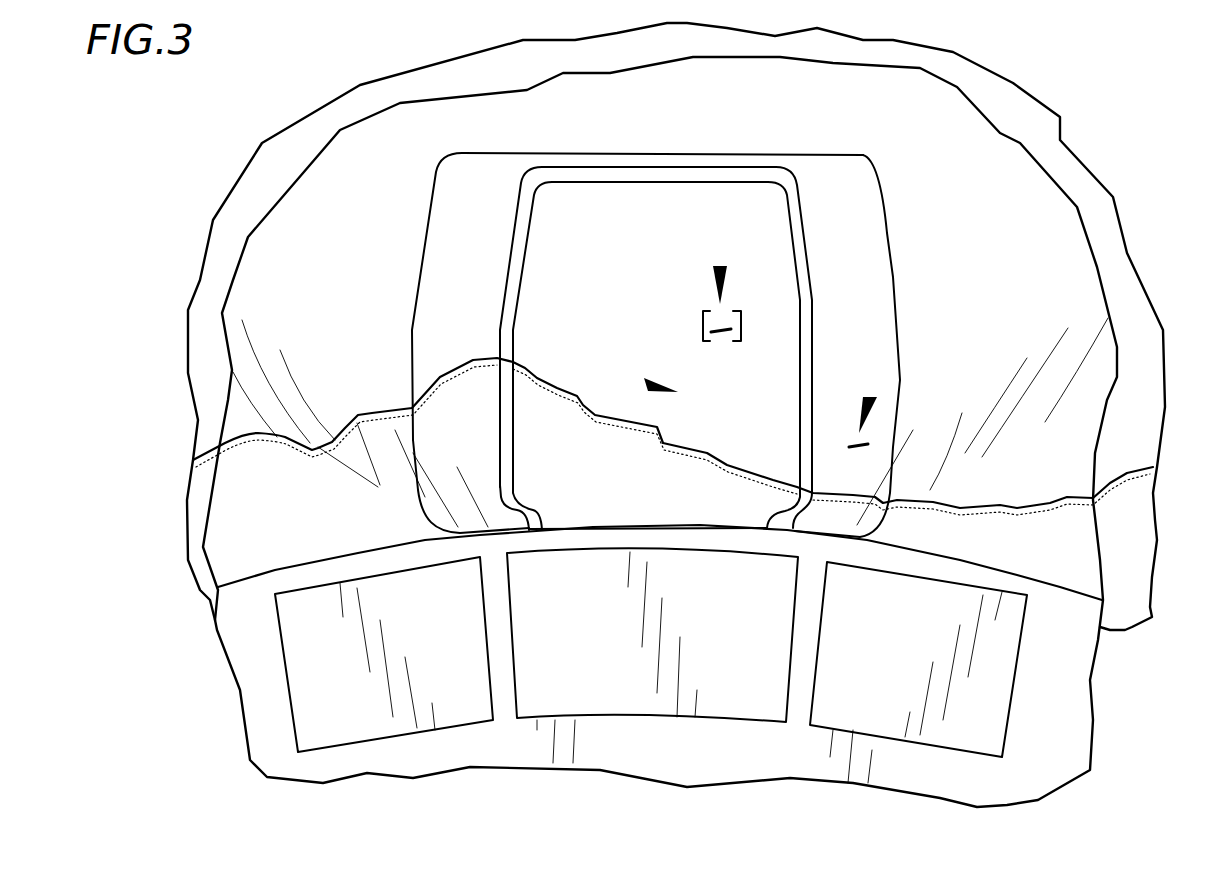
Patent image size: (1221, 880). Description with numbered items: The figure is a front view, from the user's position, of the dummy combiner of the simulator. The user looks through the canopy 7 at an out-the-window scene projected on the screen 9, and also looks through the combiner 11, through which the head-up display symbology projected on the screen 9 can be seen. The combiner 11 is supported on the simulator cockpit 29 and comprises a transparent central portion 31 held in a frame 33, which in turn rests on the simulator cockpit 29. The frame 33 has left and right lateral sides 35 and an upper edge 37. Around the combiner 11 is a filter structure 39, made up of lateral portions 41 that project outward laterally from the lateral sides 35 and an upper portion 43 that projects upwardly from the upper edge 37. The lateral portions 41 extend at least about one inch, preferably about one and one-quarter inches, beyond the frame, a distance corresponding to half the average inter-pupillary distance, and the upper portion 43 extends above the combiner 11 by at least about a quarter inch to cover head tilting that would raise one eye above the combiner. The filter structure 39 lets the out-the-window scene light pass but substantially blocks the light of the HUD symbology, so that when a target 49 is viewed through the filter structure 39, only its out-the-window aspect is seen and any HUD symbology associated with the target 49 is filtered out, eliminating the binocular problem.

The canopy 7 is at (343, 180).
The screen 9 is at (413, 90).
The combiner 11 is at (664, 279).
The simulator cockpit 29 is at (1057, 665).
The transparent central portion 31 is at (765, 283).
The frame 33 is at (538, 173).
The lateral sides 35 is at (497, 323).
The upper edge 37 is at (652, 190).
The filter structure 39 is at (850, 177).
The lateral portions 41 is at (418, 240).
The upper portion 43 is at (645, 163).
The target 49 is at (722, 266).